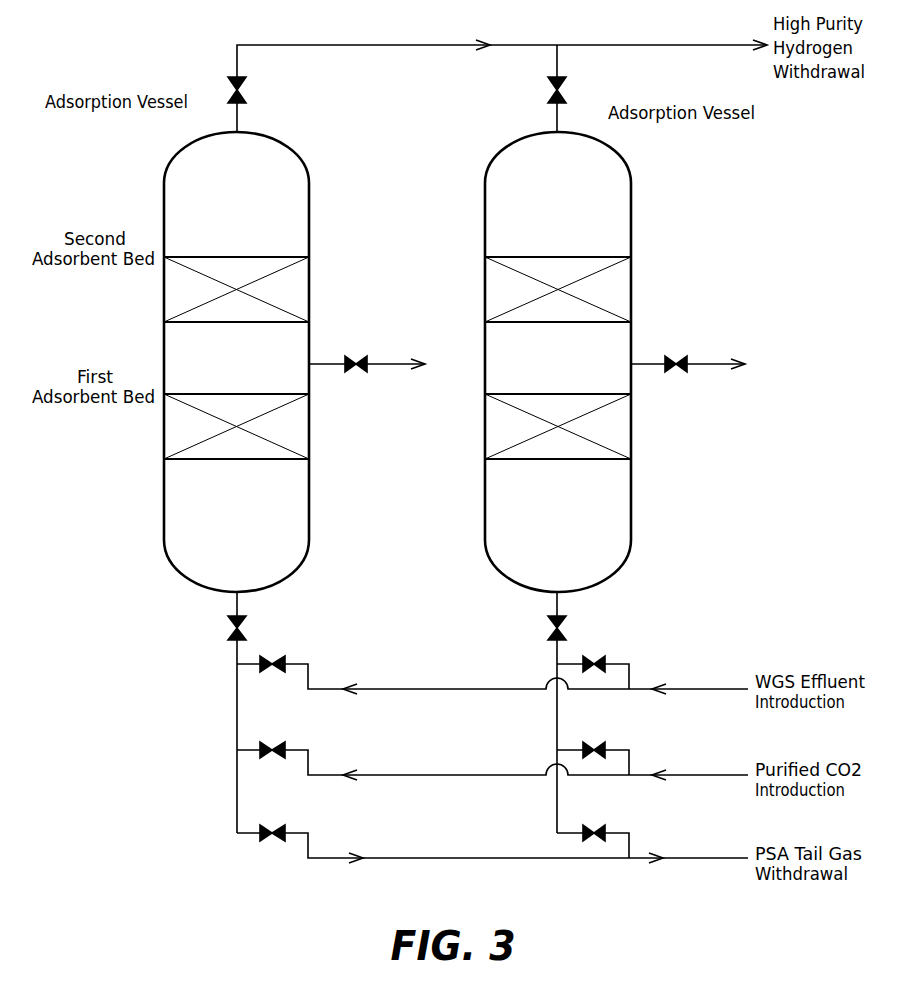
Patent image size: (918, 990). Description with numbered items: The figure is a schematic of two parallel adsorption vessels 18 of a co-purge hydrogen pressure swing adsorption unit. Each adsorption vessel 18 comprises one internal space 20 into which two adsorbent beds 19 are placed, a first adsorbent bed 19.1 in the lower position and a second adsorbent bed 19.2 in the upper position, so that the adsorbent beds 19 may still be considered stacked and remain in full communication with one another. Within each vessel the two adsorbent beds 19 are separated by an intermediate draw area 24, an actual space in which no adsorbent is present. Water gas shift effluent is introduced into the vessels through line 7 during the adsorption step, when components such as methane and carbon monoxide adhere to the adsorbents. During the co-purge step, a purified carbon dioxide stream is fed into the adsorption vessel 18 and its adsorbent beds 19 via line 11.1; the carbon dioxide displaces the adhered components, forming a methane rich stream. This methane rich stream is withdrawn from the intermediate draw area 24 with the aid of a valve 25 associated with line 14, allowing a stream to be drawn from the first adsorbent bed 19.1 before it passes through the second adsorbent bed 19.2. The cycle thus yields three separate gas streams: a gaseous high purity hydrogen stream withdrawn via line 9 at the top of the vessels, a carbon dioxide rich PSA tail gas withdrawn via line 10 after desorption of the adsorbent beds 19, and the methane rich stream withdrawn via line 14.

The line by which high purity hydrogen is withdrawn 9 is at (400, 45).
The adsorption vessel 18 is at (183, 151).
The internal space of adsorption vessel 20 is at (397, 198).
The intermediate draw area 24 is at (397, 360).
The adsorbent bed 19 is at (397, 357).
The second adsorbent bed 19.2 is at (174, 286).
The first adsorbent bed 19.1 is at (174, 428).
The line by which a methane rich stream is withdrawn 14 is at (534, 367).
The valve 25 is at (360, 373).
The line that introduces water gas shift effluent 7 is at (387, 689).
The line by which the purified stream of carbon dioxide is injected 11.1 is at (385, 775).
The line through which the pressure swing adsorption tail gas is withdrawn 10 is at (373, 858).